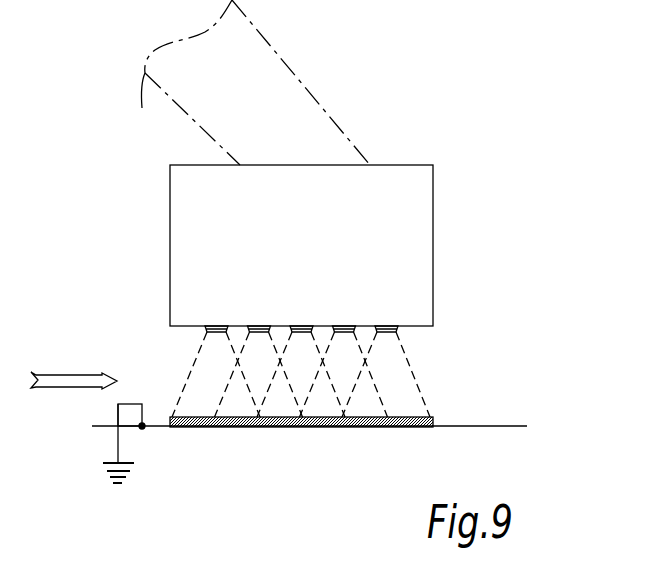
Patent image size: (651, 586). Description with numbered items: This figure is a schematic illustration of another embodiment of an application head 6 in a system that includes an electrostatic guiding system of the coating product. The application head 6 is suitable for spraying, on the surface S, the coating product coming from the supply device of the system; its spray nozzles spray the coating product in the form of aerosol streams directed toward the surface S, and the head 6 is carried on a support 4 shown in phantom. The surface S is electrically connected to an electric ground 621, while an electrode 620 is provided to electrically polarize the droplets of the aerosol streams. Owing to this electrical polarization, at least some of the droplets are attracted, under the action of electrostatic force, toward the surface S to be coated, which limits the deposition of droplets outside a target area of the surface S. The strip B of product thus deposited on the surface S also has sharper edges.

The robot arm 4 is at (255, 82).
The application head 6 is at (423, 211).
The electrode 620 is at (82, 380).
The electric ground 621 is at (111, 492).
The strip of product B is at (330, 431).
The surface S is at (514, 422).